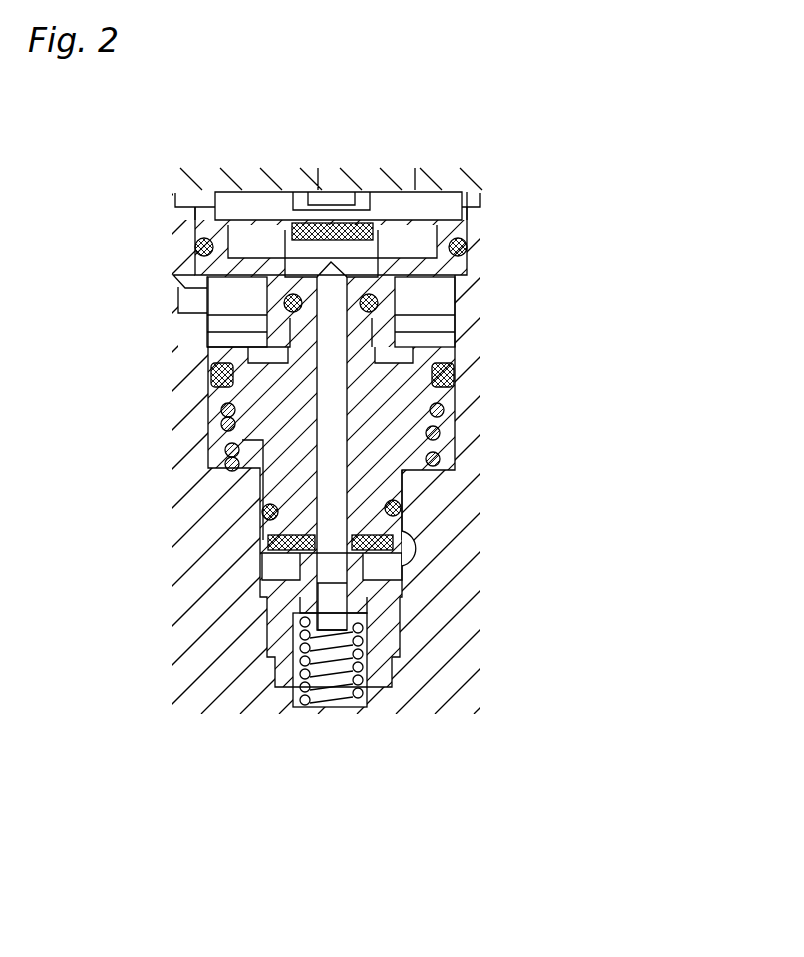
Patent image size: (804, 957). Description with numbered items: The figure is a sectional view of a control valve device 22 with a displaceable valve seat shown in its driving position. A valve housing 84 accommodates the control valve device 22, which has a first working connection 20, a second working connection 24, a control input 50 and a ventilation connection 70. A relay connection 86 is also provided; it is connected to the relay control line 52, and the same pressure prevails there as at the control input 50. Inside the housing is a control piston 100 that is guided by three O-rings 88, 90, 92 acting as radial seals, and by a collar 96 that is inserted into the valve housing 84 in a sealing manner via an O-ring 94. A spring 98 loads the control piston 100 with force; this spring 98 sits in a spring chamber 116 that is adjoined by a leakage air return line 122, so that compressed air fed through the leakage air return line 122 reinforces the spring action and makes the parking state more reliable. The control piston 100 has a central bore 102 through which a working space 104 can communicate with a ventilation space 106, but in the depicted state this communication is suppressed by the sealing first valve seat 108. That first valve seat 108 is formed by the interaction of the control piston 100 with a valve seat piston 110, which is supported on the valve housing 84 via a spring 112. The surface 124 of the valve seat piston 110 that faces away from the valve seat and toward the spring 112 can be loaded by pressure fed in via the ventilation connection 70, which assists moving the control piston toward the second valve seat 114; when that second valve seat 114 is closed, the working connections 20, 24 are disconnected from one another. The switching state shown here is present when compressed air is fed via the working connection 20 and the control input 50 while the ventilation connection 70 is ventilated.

The control valve device 22 is at (128, 822).
The first working connection 20 is at (338, 178).
The second working connection 24 is at (437, 180).
The working space 104 is at (258, 205).
The second valve seat 114 is at (353, 214).
The collar 96 is at (203, 233).
The O-ring 94 is at (465, 240).
The relay connection 86 is at (188, 300).
The control input 50 is at (470, 298).
The relay control line 52 is at (188, 308).
The O-ring 92 is at (378, 302).
The central bore 102 is at (330, 440).
The O-ring 90 is at (455, 373).
The spring chamber 116 is at (450, 405).
The spring 98 is at (446, 432).
The leakage air return line 122 is at (462, 440).
The control piston 100 is at (290, 490).
The O-ring 88 is at (401, 500).
The ventilation space 106 is at (273, 553).
The first valve seat 108 is at (262, 583).
The ventilation connection 70 is at (412, 548).
The valve seat piston 110 is at (355, 610).
The surface 124 is at (290, 700).
The spring 112 is at (345, 690).
The valve housing 84 is at (443, 690).